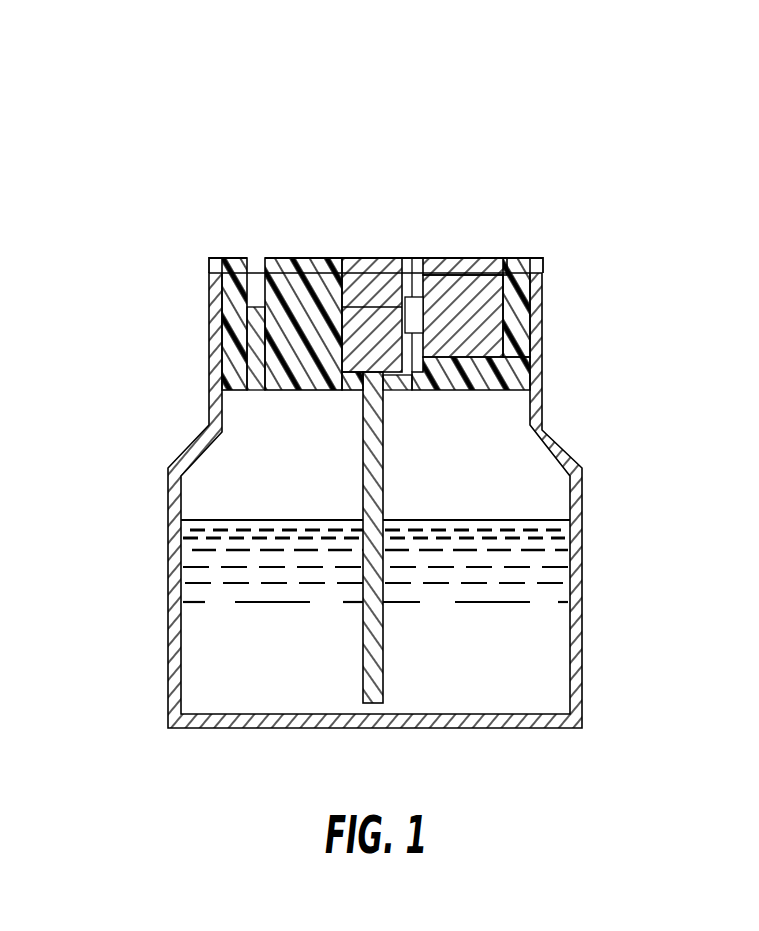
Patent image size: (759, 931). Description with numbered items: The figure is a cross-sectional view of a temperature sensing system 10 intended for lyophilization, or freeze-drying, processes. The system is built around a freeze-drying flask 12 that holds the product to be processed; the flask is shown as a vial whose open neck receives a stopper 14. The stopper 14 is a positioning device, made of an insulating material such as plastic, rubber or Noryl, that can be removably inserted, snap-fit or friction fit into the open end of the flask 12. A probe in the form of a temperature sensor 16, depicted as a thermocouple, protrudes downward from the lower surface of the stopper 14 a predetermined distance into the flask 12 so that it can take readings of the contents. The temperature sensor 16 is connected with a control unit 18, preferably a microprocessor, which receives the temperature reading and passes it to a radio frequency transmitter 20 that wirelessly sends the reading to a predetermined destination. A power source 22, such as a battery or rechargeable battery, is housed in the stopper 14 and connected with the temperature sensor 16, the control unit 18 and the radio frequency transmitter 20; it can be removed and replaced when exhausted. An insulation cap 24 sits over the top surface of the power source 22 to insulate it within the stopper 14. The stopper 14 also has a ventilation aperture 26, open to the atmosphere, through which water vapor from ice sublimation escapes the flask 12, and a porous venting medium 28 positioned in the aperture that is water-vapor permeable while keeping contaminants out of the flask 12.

The temperature sensing system 10 is at (452, 134).
The flask 12 is at (210, 388).
The stopper 14 is at (518, 275).
The temperature sensor 16 is at (362, 487).
The control unit 18 is at (396, 380).
The radio frequency transmitter 20 is at (366, 276).
The power source 22 is at (468, 320).
The insulation cap 24 is at (463, 272).
The ventilation aperture 26 is at (257, 262).
The porous venting medium 28 is at (253, 392).